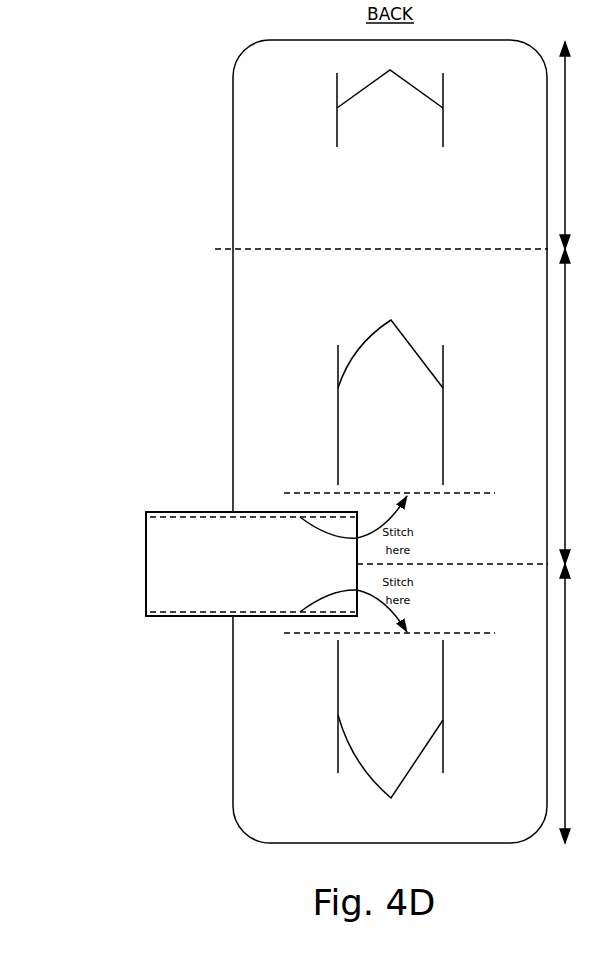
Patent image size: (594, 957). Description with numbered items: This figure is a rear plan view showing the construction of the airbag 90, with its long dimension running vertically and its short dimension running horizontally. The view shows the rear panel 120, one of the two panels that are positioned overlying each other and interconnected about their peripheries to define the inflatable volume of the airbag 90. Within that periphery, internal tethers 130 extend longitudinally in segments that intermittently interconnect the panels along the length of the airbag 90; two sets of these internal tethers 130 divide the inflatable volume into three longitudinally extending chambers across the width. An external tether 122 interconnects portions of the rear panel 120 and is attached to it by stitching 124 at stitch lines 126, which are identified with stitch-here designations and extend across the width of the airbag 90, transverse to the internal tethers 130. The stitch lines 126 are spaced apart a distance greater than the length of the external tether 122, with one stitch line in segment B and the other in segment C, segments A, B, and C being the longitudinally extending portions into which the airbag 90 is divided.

The airbag 90 is at (196, 52).
The rear panel 120 is at (278, 389).
The external tether 122 is at (184, 555).
The stitching 124 is at (170, 512).
The stitch lines 126 is at (452, 495).
The internal tethers 130 is at (390, 438).